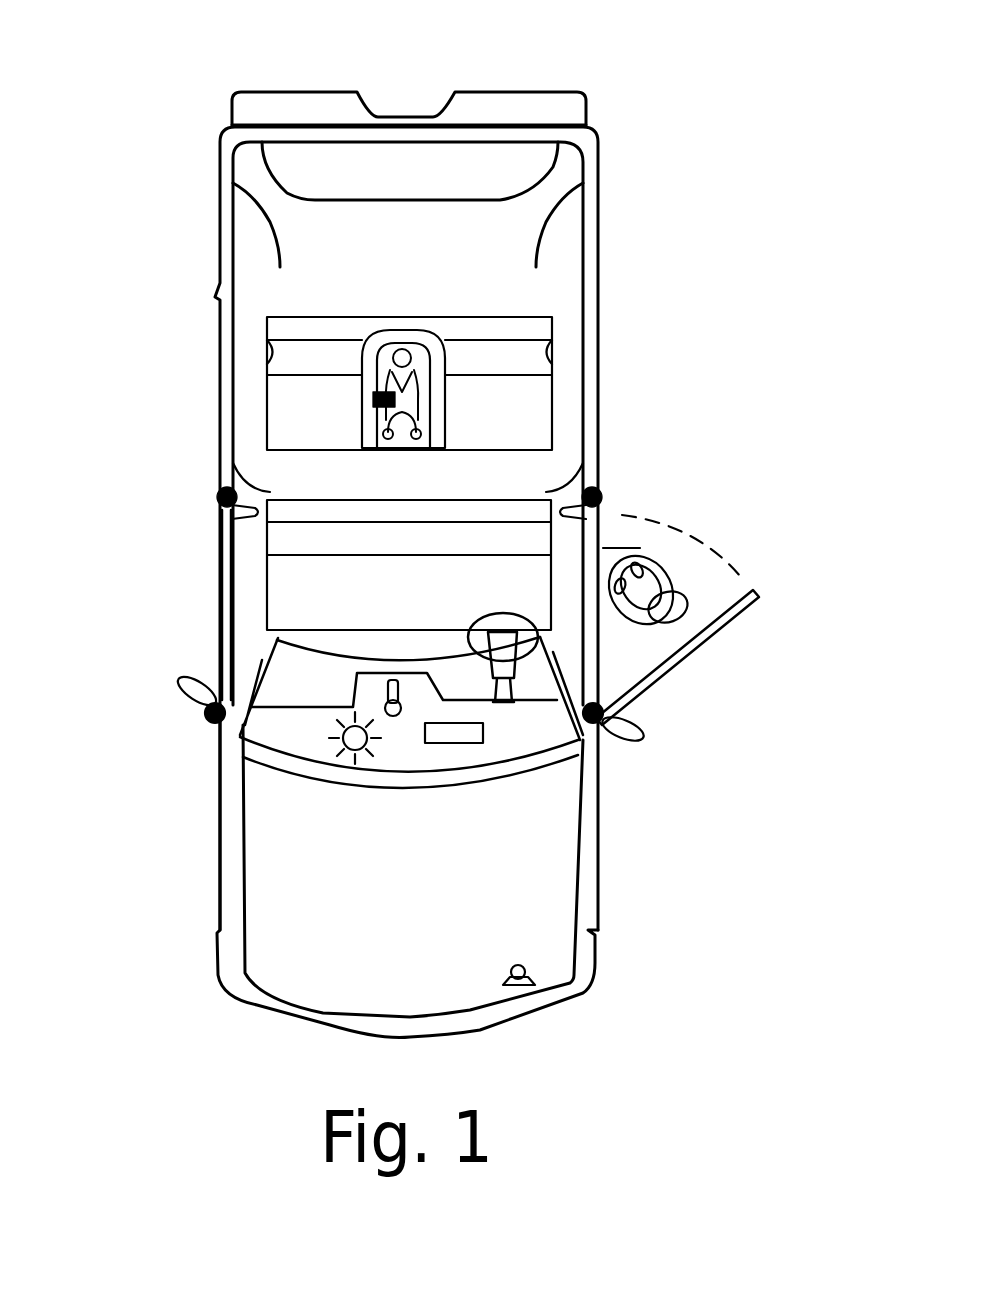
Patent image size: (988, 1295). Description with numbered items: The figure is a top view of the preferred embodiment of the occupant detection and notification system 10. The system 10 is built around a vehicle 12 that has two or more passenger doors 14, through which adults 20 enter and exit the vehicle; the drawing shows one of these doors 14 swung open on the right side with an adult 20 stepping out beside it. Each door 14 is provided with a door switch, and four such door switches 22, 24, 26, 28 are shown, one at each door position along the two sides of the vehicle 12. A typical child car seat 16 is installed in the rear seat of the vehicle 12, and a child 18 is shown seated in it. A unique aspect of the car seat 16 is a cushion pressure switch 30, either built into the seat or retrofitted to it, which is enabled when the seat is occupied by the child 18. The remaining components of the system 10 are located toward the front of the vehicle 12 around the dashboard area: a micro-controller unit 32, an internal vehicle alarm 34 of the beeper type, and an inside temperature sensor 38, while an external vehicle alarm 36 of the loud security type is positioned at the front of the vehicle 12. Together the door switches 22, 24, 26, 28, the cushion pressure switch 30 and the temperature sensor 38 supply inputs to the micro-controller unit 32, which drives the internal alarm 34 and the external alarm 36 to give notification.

The occupant detection and notification system 10 is at (130, 41).
The vehicle 12 is at (607, 290).
The passenger doors 14 is at (205, 558).
The child car seat 16 is at (443, 423).
The child 18 is at (413, 350).
The adults 20 is at (675, 580).
The door switch 22 is at (600, 725).
The door switch 24 is at (207, 717).
The door switch 26 is at (602, 490).
The door switch 28 is at (217, 500).
The cushion pressure switch 30 is at (373, 398).
The micro-controller unit 32 is at (470, 740).
The internal vehicle alarm 34 is at (353, 742).
The external vehicle alarm 36 is at (533, 990).
The inside temperature sensor 38 is at (387, 697).